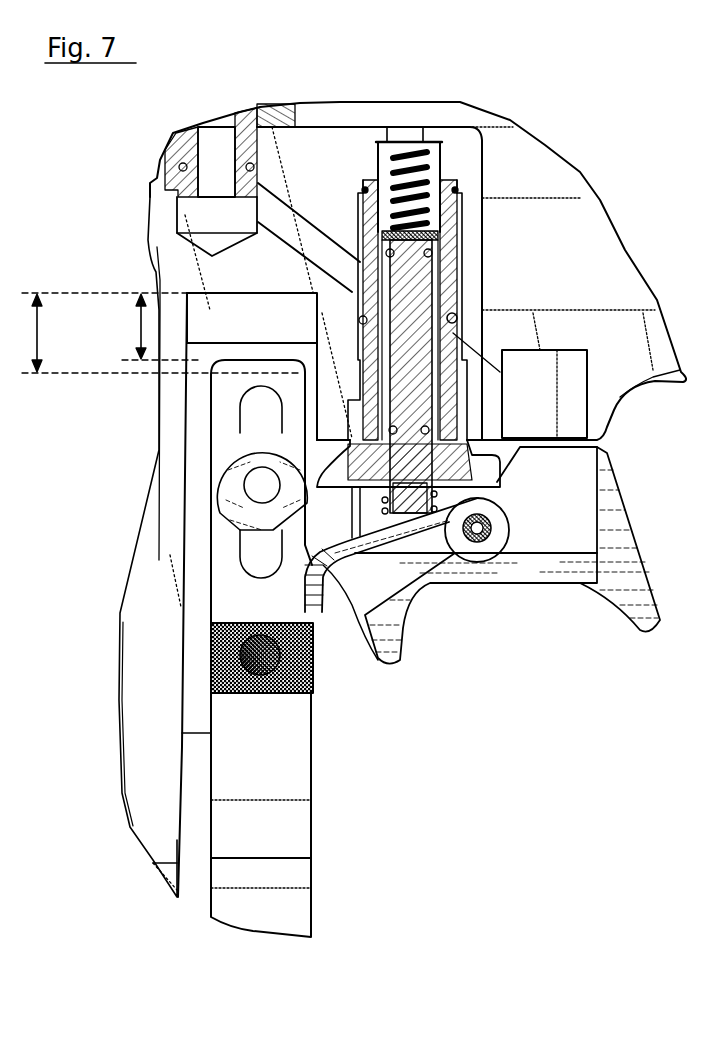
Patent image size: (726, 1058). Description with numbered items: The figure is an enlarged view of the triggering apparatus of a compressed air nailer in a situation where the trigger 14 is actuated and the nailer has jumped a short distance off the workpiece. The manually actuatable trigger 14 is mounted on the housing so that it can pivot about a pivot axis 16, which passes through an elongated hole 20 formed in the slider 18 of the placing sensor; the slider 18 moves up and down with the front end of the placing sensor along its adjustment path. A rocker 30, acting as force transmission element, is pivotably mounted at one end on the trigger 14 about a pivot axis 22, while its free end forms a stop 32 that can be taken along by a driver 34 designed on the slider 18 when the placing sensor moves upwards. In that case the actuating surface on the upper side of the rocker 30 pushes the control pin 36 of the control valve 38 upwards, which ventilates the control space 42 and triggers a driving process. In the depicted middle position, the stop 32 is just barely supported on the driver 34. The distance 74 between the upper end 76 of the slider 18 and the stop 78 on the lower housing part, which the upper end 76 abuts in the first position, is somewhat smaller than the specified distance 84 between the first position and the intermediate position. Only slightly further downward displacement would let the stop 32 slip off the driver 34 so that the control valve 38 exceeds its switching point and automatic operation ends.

The trigger 14 is at (640, 598).
The pivot axis 16 is at (255, 487).
The slider 18 is at (293, 833).
The elongated hole 20 is at (245, 568).
The pivot axis 22 is at (480, 535).
The rocker 30 is at (386, 533).
The stop 32 is at (320, 640).
The driver 34 is at (312, 710).
The control pin 36 is at (457, 373).
The control valve 38 is at (462, 322).
The control space 42 is at (218, 135).
The distance 74 is at (138, 323).
The upper end 76 is at (233, 352).
The stop 78 is at (217, 305).
The specified distance 84 is at (38, 345).